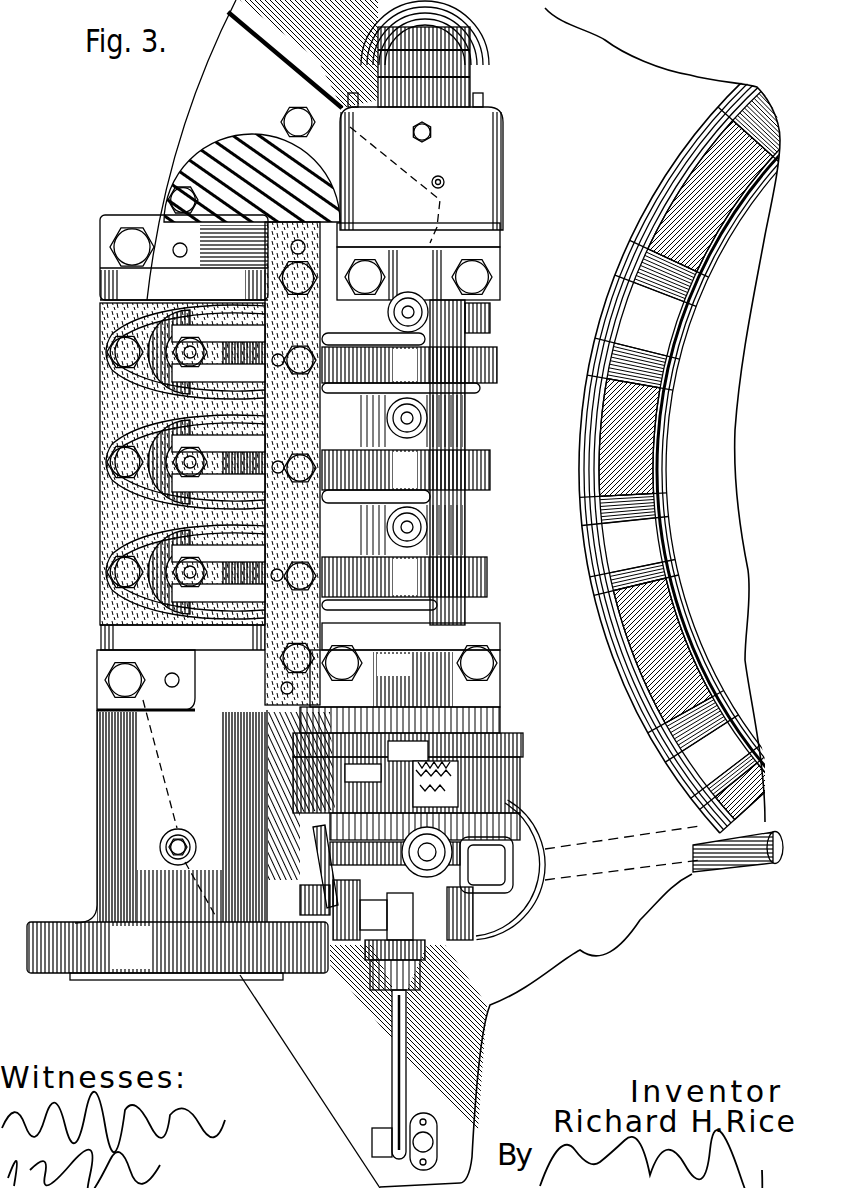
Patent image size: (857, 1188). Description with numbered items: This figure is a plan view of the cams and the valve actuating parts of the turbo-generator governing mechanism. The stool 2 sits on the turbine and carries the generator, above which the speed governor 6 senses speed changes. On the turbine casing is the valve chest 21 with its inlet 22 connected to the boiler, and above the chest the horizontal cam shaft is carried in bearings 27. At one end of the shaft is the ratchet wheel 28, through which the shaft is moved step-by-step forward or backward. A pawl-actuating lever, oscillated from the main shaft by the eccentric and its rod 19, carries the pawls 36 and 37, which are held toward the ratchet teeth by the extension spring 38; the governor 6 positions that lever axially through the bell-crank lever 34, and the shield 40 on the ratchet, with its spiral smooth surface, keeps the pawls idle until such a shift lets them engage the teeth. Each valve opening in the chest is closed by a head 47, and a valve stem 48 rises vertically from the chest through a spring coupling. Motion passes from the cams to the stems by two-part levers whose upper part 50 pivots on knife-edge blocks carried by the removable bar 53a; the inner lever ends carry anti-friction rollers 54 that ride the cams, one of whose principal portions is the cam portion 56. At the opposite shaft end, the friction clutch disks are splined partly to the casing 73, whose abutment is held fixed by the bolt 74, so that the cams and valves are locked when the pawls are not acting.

The stool 2 is at (500, 510).
The speed governor 6 is at (100, 348).
The rod 19 is at (722, 876).
The valve chest 21 is at (105, 424).
The inlet 22 is at (143, 975).
The bearings 27 is at (410, 268).
The ratchet wheel 28 is at (512, 741).
The bell-crank lever 34 is at (394, 1058).
The pawl 36 is at (435, 784).
The pawl 37 is at (408, 751).
The extension spring 38 is at (400, 776).
The shield 40 is at (522, 762).
The head 47 is at (133, 543).
The valve stem 48 is at (190, 357).
The lever part 50 is at (350, 397).
The removable bar 53a is at (268, 707).
The anti-friction rollers 54 is at (402, 356).
The cam portion 56 is at (480, 565).
The casing 73 is at (470, 68).
The bolt 74 is at (428, 138).